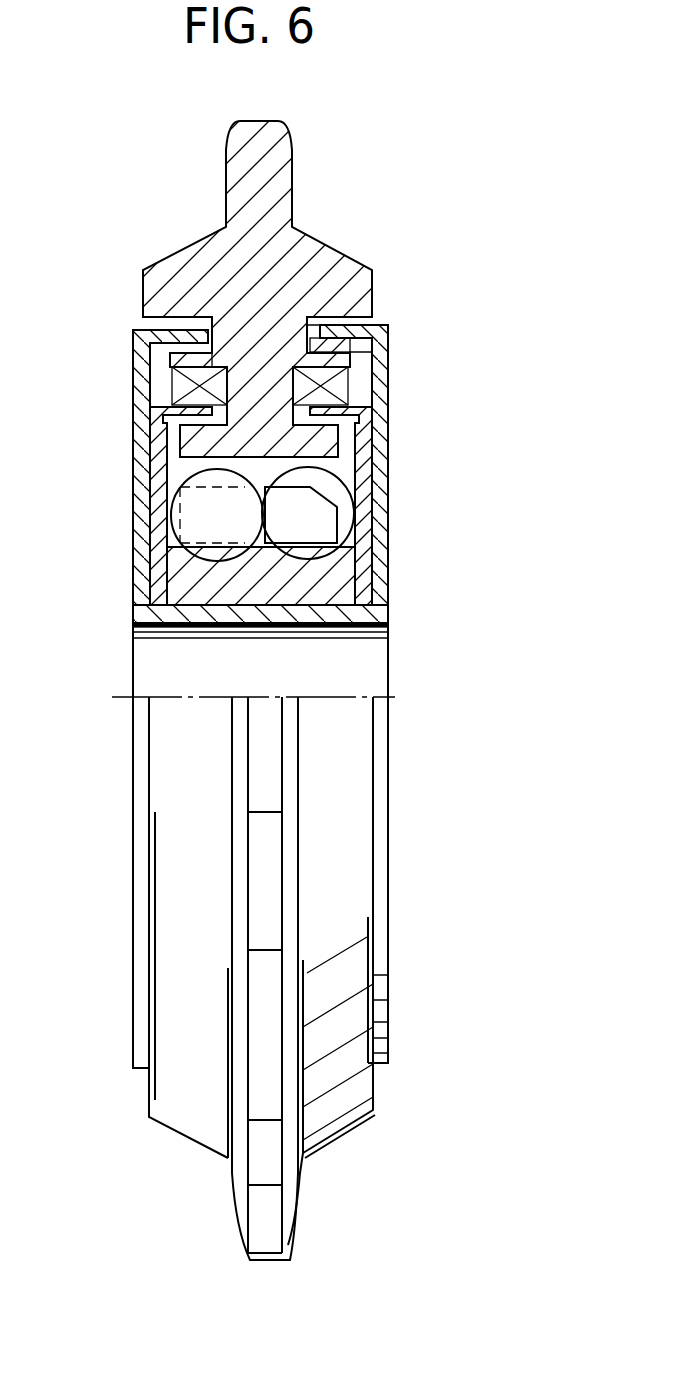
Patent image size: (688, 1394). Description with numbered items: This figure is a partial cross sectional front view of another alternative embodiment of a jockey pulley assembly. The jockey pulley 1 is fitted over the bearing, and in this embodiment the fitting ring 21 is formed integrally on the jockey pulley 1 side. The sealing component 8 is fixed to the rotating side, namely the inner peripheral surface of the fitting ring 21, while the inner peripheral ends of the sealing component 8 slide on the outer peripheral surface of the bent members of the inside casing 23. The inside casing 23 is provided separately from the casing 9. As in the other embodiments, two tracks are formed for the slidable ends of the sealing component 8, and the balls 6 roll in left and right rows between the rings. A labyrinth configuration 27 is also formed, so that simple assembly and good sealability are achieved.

The jockey pulley 1 is at (245, 216).
The labyrinth configuration 27 is at (200, 330).
The fitting ring 21 is at (385, 356).
The sealing component 8 is at (182, 398).
The balls 6 is at (190, 495).
The inside casing 23 is at (372, 492).
The casing 9 is at (378, 587).